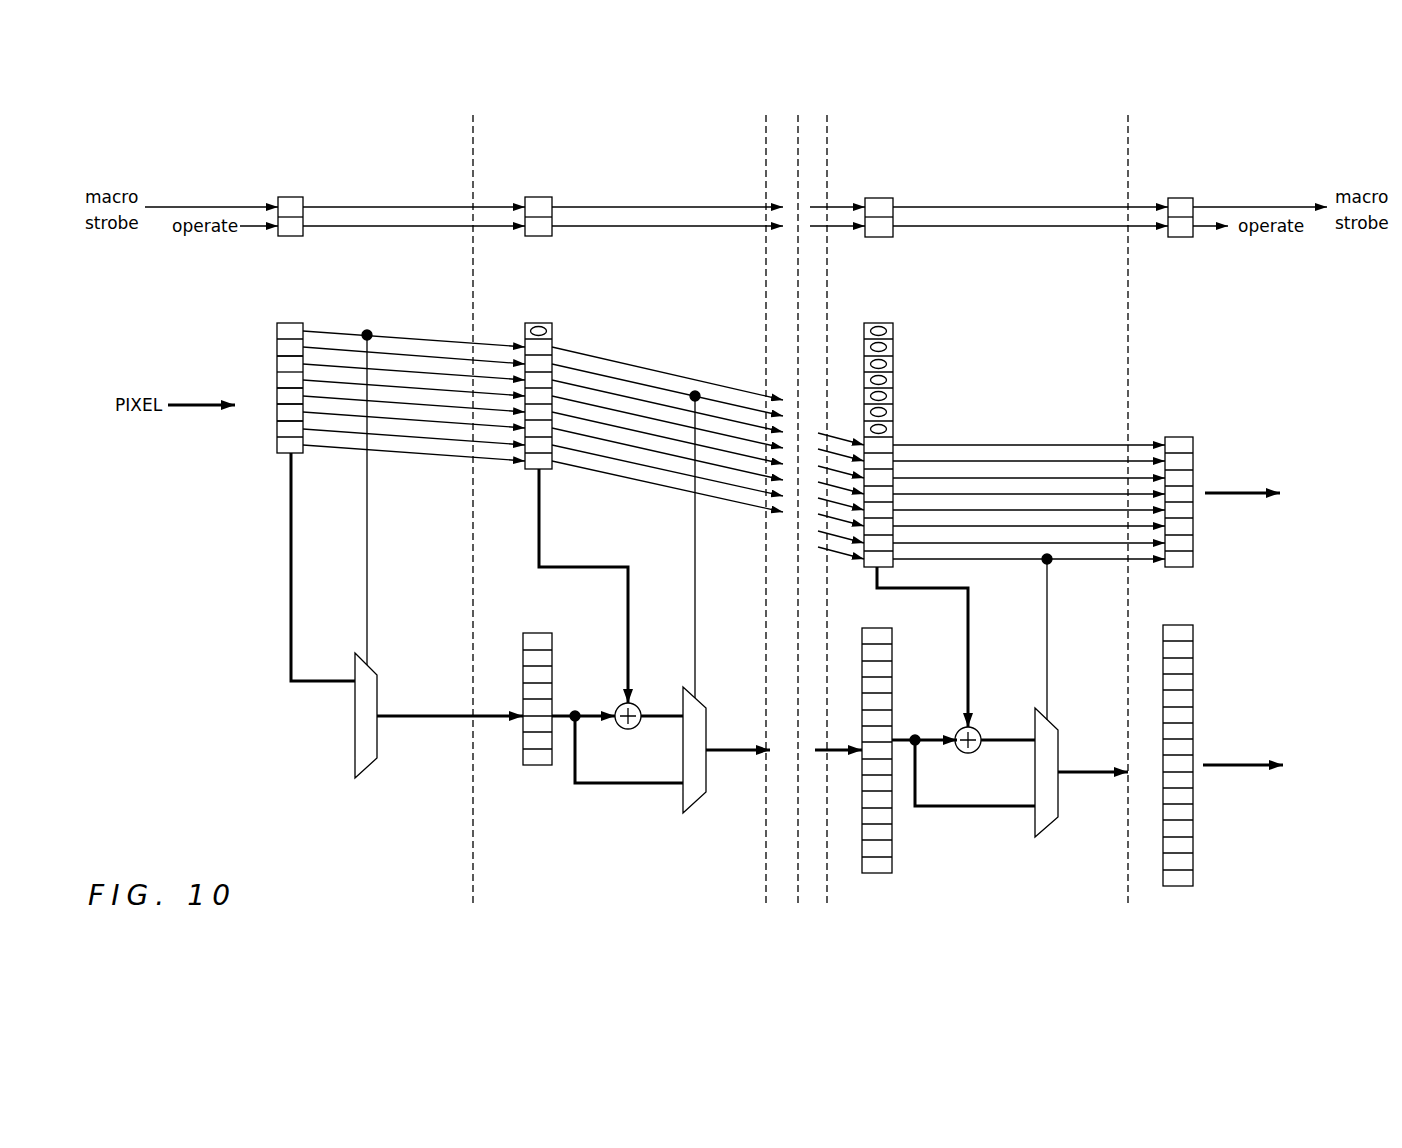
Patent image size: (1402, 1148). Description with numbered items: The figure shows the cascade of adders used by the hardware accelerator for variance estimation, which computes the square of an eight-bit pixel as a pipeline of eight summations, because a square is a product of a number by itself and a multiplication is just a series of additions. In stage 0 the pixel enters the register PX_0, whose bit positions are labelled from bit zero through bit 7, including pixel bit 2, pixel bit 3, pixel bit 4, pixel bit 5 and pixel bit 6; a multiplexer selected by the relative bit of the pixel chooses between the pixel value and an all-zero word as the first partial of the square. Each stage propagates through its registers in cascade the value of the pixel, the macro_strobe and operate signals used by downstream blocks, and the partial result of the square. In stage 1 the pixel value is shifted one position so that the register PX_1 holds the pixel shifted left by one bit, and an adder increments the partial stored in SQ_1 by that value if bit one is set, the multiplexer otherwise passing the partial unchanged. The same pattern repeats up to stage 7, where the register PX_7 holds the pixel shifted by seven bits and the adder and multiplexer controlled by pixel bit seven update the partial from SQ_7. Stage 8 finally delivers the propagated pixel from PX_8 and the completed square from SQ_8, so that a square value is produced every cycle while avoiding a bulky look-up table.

The stage 0 is at (390, 461).
The stage 1 is at (650, 479).
The stage 7 is at (989, 527).
The stage 8 is at (1254, 534).
The pixel bit 2 is at (391, 368).
The pixel bit 3 is at (391, 384).
The pixel bit 4 is at (391, 400).
The pixel bit 5 is at (391, 416).
The pixel bit 6 is at (391, 433).